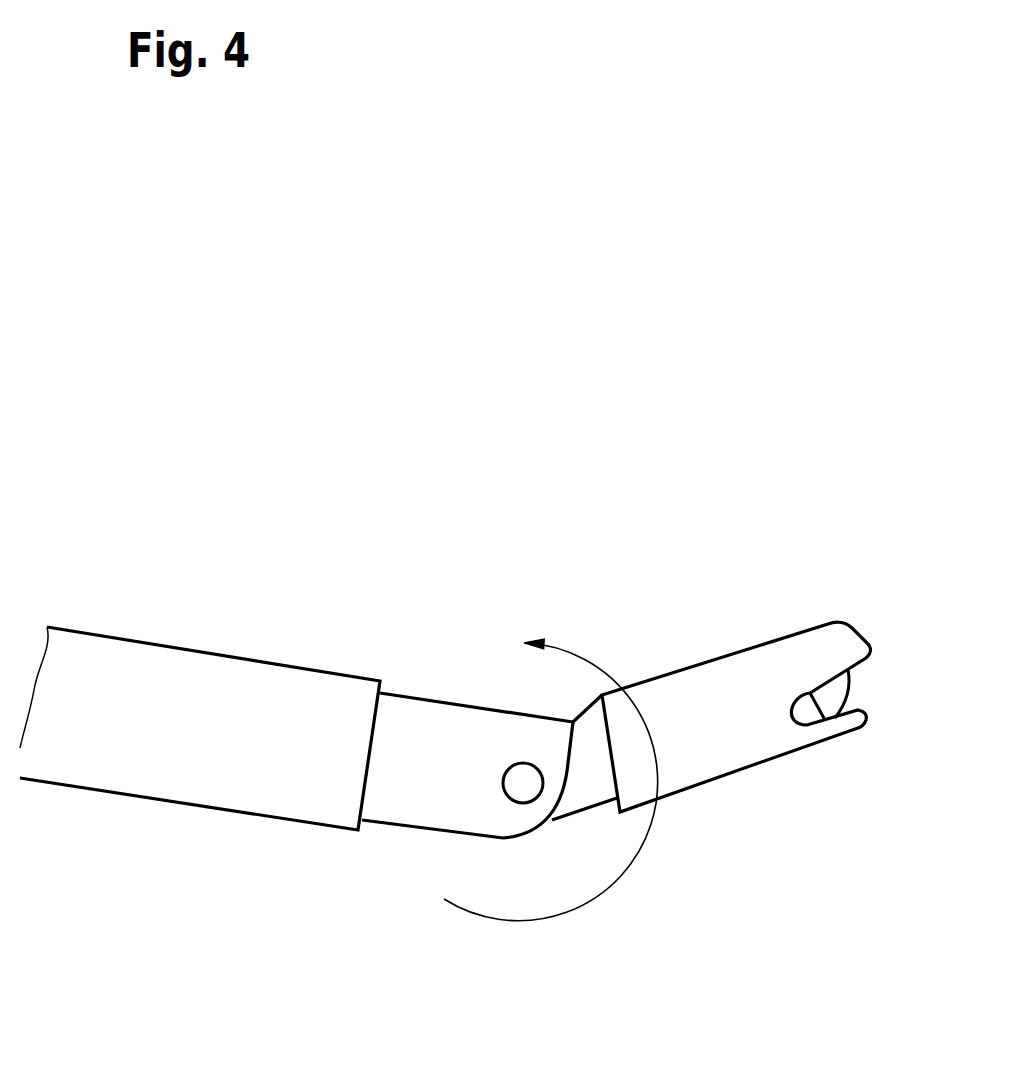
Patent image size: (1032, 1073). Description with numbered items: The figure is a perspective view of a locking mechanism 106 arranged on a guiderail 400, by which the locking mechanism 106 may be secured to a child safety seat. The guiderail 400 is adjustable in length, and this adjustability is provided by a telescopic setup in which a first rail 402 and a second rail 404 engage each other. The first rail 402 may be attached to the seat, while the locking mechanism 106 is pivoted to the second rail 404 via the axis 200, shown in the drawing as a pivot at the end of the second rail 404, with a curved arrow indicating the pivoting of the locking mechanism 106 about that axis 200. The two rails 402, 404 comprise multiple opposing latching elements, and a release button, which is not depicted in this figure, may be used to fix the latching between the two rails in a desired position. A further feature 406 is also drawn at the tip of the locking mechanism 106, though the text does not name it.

The guiderail 400 is at (428, 644).
The first rail 402 is at (153, 783).
The second rail 404 is at (408, 813).
The axis 200 is at (513, 775).
The locking mechanism 106 is at (742, 758).
The tooth 406 is at (835, 692).